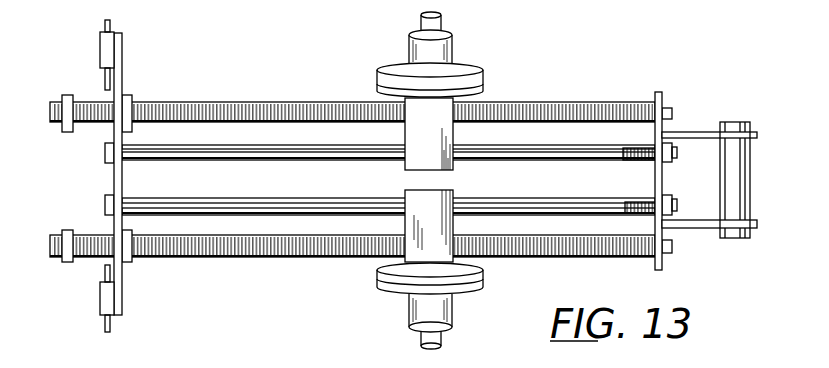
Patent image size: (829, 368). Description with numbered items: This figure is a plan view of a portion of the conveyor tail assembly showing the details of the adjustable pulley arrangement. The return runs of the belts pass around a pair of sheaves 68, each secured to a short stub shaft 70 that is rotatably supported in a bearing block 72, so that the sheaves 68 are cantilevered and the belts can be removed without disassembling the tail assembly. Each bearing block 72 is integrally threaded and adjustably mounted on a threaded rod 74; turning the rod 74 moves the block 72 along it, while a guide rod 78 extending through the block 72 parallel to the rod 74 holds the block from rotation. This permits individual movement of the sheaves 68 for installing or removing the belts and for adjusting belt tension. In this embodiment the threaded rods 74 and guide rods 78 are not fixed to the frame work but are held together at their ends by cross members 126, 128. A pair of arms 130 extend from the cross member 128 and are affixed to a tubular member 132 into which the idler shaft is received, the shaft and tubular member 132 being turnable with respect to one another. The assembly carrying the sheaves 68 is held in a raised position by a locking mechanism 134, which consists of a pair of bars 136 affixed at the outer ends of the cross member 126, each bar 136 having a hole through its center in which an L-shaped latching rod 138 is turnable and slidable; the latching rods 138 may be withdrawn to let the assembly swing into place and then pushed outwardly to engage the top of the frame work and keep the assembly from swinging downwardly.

The sheaves 68 is at (462, 72).
The stub shaft 70 is at (421, 25).
The bearing block 72 is at (447, 170).
The threaded rod 74 is at (572, 103).
The guide rod 78 is at (607, 161).
The cross member 126 is at (122, 84).
The cross member 128 is at (662, 100).
The arms 130 is at (688, 219).
The tubular member 132 is at (737, 190).
The locking mechanism 134 is at (96, 306).
The bars 136 is at (100, 50).
The latching rod 138 is at (100, 78).